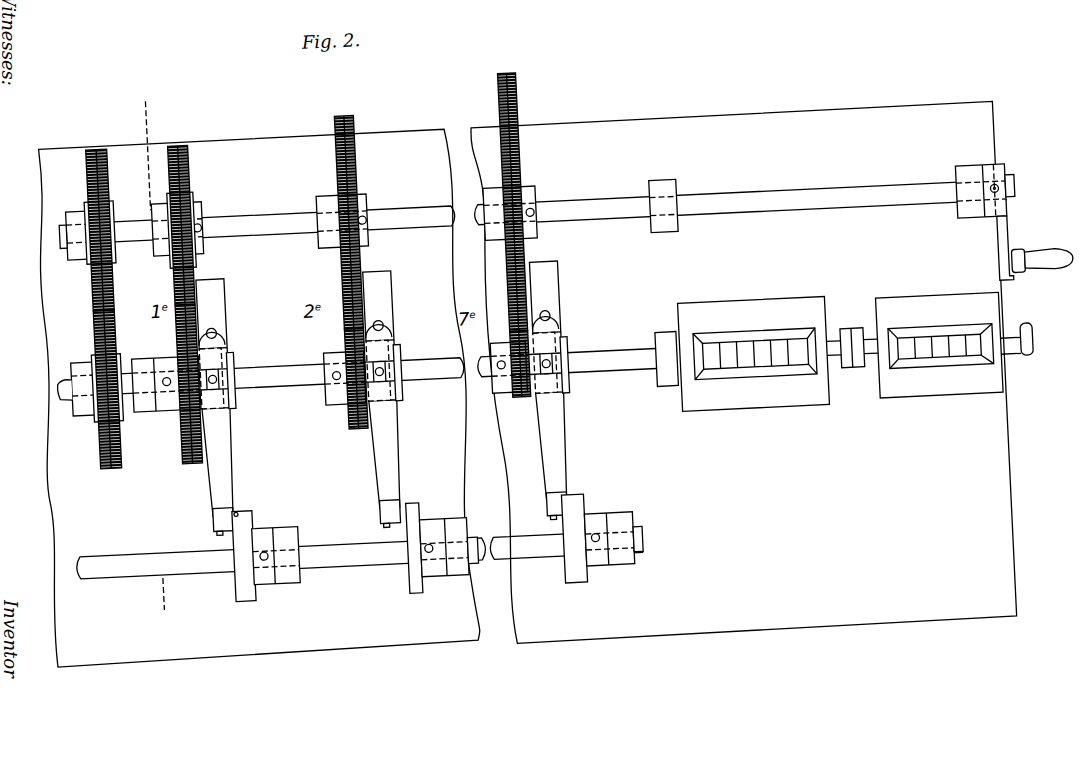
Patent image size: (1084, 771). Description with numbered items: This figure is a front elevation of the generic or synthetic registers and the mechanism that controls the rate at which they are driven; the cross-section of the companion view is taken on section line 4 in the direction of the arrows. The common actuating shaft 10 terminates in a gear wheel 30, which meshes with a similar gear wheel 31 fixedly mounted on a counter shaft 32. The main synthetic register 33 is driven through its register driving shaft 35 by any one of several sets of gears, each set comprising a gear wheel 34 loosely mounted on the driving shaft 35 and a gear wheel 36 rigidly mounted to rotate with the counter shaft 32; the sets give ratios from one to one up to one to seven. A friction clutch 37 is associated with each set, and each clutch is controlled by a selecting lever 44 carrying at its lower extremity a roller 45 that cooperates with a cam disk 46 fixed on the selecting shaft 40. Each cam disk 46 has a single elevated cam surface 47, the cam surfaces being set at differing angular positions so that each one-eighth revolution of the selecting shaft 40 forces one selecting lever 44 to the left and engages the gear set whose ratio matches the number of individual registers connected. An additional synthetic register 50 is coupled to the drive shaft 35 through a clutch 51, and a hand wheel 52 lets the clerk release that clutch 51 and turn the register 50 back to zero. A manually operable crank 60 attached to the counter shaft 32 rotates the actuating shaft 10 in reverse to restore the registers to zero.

The section line 4— 4 is at (157, 83).
The common actuating shaft 10 is at (63, 366).
The gear wheel 30 is at (79, 460).
The gear wheel 31 is at (120, 142).
The counter shaft 32 is at (268, 201).
The generic or synthetic register 33 is at (780, 400).
The gear wheel 34 is at (184, 428).
The register driving shaft 35 is at (277, 360).
The gear wheel 36 is at (194, 152).
The friction clutch 37 is at (239, 346).
The selecting shaft 40 is at (349, 552).
The selecting lever 44 is at (226, 455).
The roller 45 is at (214, 507).
The cam disk 46 is at (247, 510).
The elevated cam surface 47 is at (233, 496).
The additional synthetic register 50 is at (942, 400).
The clutch 51 is at (850, 343).
The hand wheel 52 is at (1034, 362).
The manually operable crank 60 is at (1014, 259).